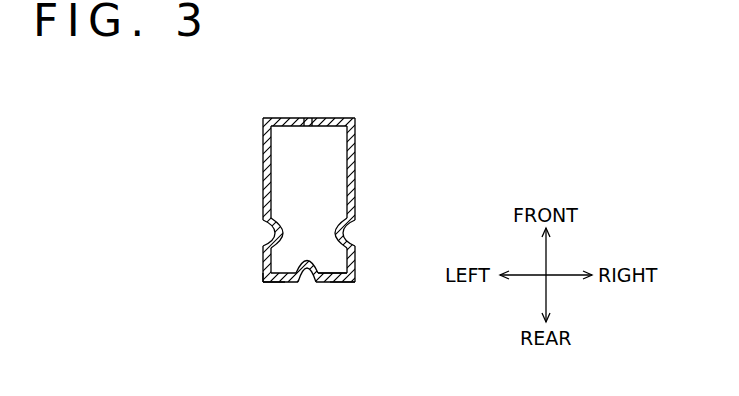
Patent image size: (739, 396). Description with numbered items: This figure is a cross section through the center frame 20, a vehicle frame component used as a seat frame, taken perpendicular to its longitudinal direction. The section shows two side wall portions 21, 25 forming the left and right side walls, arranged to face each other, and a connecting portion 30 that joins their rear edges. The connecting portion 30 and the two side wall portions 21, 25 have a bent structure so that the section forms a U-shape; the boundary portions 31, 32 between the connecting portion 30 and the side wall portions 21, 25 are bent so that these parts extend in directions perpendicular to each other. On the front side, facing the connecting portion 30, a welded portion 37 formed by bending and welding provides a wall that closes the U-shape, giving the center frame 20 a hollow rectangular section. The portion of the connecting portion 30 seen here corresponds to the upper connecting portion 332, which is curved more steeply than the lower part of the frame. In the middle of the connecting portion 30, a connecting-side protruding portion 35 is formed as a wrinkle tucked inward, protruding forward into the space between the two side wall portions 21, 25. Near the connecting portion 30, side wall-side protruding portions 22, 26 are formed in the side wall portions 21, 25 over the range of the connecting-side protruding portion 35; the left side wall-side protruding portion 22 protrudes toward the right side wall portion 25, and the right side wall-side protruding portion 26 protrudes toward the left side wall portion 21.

The center frame 20 is at (383, 190).
The side wall portion 21 is at (262, 157).
The side wall-side protruding portion 22 is at (268, 234).
The side wall portion 25 is at (358, 157).
The side wall-side protruding portion 26 is at (347, 233).
The connecting portion 30 is at (278, 283).
The boundary portion 31 is at (262, 282).
The boundary portion 32 is at (343, 282).
The upper connecting portion 332 is at (334, 282).
The connecting-side protruding portion 35 is at (306, 272).
The welded portion 37 is at (297, 118).